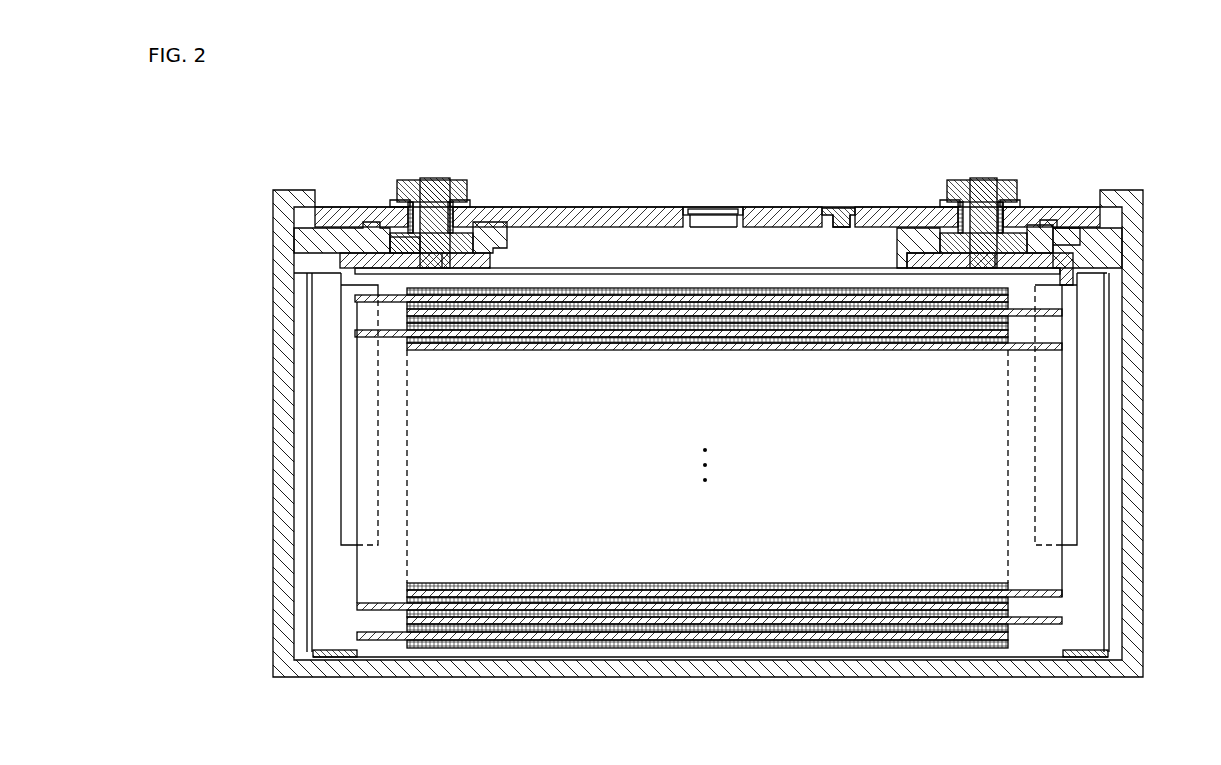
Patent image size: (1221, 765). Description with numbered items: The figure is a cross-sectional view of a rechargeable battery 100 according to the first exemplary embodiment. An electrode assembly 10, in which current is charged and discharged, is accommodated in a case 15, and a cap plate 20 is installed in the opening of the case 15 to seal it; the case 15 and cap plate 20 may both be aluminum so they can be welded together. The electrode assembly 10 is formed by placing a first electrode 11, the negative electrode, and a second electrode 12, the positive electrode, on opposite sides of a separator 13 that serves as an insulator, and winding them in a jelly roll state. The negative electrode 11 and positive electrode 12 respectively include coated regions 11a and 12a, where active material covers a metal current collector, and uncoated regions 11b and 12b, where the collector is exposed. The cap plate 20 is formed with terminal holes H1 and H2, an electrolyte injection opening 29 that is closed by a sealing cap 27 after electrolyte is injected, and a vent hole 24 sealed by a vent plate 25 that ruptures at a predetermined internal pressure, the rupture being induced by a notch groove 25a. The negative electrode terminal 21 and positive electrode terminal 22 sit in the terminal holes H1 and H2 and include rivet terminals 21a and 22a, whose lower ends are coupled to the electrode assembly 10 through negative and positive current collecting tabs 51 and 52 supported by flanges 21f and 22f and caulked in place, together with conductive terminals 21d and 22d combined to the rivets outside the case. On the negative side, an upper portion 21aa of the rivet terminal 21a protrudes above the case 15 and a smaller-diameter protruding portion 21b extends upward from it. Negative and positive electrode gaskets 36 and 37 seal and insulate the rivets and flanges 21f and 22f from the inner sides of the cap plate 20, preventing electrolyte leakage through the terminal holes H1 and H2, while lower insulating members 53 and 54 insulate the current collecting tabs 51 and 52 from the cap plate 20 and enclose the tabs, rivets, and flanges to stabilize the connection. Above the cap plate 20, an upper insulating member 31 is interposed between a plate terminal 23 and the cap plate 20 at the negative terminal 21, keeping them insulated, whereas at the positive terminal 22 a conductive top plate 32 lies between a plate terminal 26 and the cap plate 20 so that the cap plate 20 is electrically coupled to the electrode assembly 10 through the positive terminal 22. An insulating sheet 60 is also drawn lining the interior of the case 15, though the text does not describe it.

The rechargeable battery 100 is at (684, 84).
The electrode assembly 10 is at (830, 658).
The first electrode 11 is at (681, 530).
The coated region 11a is at (370, 732).
The uncoated region 11b is at (380, 642).
The second electrode 12 is at (737, 525).
The coated region 12a is at (932, 620).
The uncoated region 12b is at (920, 732).
The separator 13 is at (723, 646).
The case 15 is at (1143, 430).
The cap plate 20 is at (770, 207).
The first electrode terminal 21 is at (444, 174).
The rivet terminal 21a is at (433, 250).
The upper portion 21aa is at (472, 190).
The protruding portion 21b is at (428, 181).
The conductive terminal 21d is at (452, 182).
The flange 21f is at (469, 252).
The second electrode terminal 22 is at (983, 174).
The rivet terminal 22a is at (1003, 260).
The conductive terminal 22d is at (955, 183).
The flange 22f is at (966, 255).
The plate terminal 23 is at (470, 188).
The vent hole 24 is at (705, 228).
The vent plate 25 is at (735, 207).
The notch groove 25a is at (700, 207).
The plate terminal 26 is at (1022, 185).
The sealing cap 27 is at (846, 208).
The electrolyte injection opening 29 is at (838, 208).
The upper insulating member 31 is at (395, 203).
The top plate 32 is at (1025, 203).
The negative electrode gasket 36 is at (372, 213).
The positive electrode gasket 37 is at (925, 228).
The negative current collecting tab 51 is at (336, 402).
The positive current collecting tab 52 is at (1082, 508).
The lower insulating member 53 is at (300, 240).
The lower insulating member 54 is at (1100, 242).
The insulating sheet 60 is at (1108, 357).
The terminal hole H1 is at (413, 185).
The terminal hole H2 is at (1017, 182).